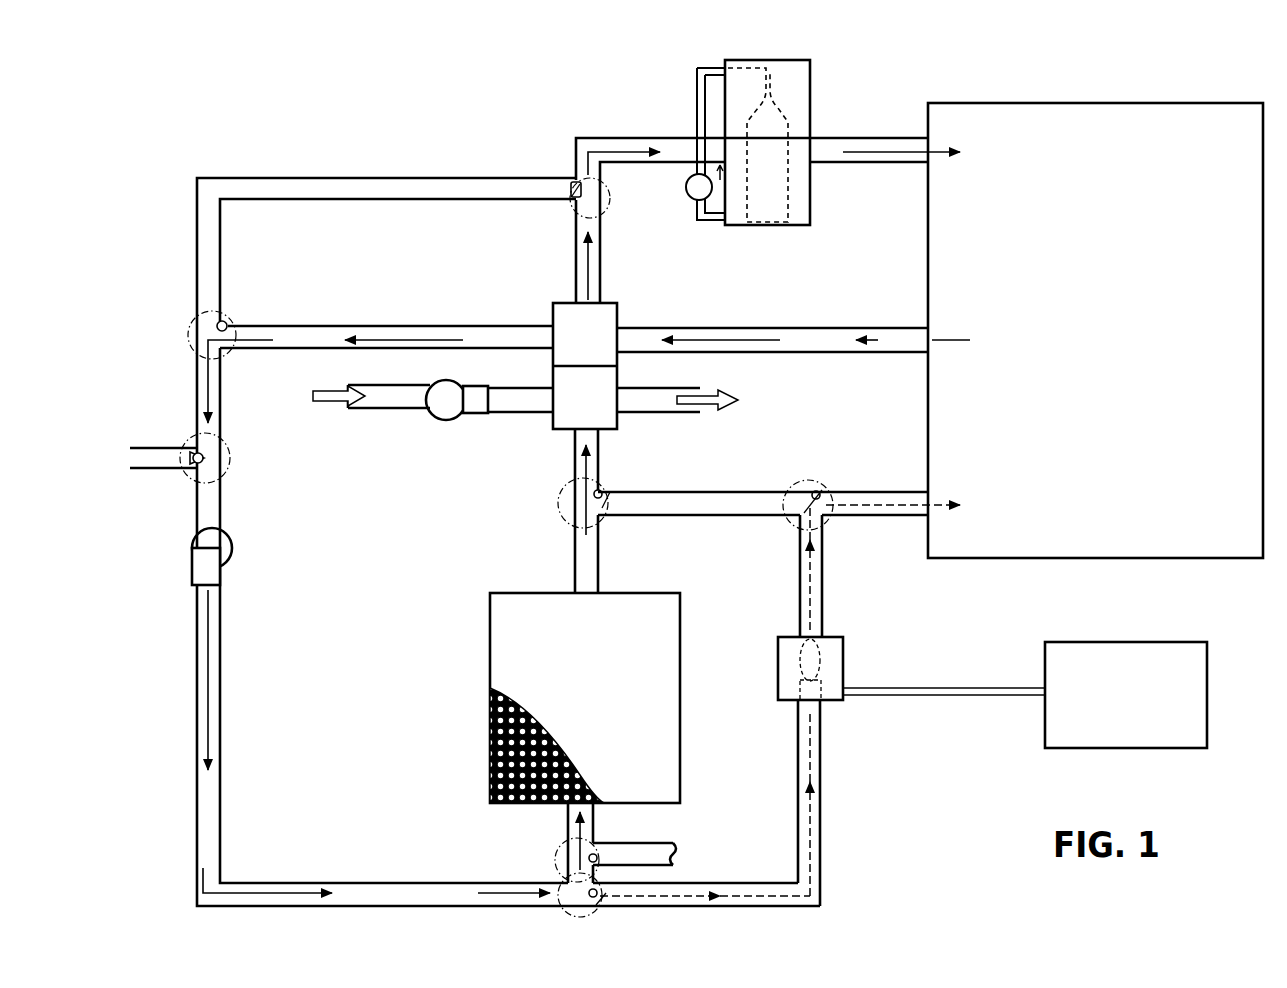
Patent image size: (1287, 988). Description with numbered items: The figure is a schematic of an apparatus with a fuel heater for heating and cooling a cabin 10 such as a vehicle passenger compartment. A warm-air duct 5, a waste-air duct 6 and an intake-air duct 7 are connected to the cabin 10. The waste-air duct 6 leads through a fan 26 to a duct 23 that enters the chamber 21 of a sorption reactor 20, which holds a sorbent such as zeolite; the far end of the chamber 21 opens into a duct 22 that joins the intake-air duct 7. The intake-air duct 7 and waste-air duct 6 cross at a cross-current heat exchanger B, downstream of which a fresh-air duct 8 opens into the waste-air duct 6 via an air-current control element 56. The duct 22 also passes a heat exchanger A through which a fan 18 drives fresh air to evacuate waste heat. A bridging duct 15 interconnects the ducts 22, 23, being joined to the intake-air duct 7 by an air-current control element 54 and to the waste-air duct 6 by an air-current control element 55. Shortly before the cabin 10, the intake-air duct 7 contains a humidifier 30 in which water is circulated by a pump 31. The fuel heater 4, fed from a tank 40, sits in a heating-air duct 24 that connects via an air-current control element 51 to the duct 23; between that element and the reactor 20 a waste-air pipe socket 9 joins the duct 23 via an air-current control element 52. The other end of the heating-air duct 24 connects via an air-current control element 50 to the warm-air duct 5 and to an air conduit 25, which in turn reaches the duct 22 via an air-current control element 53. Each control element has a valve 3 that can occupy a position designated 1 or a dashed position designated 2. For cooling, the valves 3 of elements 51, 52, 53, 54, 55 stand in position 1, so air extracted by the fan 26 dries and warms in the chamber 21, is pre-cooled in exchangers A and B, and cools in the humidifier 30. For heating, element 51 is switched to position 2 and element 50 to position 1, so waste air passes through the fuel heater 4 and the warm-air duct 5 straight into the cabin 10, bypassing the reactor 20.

The valve position one 1 is at (486, 570).
The valve position two 2 is at (540, 529).
The valve 3 is at (471, 570).
The heating device 4 is at (778, 659).
The warm-air duct 5 is at (884, 493).
The waste-air duct 6 is at (405, 326).
The intake-air duct 7 is at (882, 140).
The fresh-air duct 8 is at (160, 448).
The waste-air pipe socket 9 is at (673, 850).
The cabin 10 is at (1081, 337).
The bridging duct 15 is at (372, 177).
The fan 18 is at (440, 418).
The sorption reactor 20 is at (490, 634).
The chamber 21 is at (490, 742).
The duct 22 is at (600, 550).
The duct 23 is at (568, 820).
The heating-air duct 24 is at (798, 581).
The air conduit 25 is at (715, 492).
The fan 26 is at (230, 565).
The humidifier 30 is at (812, 94).
The pump 31 is at (687, 197).
The tank 40 is at (1108, 711).
The air-current control element 50 is at (841, 490).
The air-current control element 51 is at (566, 908).
The air-current control element 52 is at (555, 847).
The air-current control element 53 is at (566, 516).
The air-current control element 54 is at (568, 181).
The air-current control element 55 is at (205, 341).
The air-current control element 56 is at (230, 462).